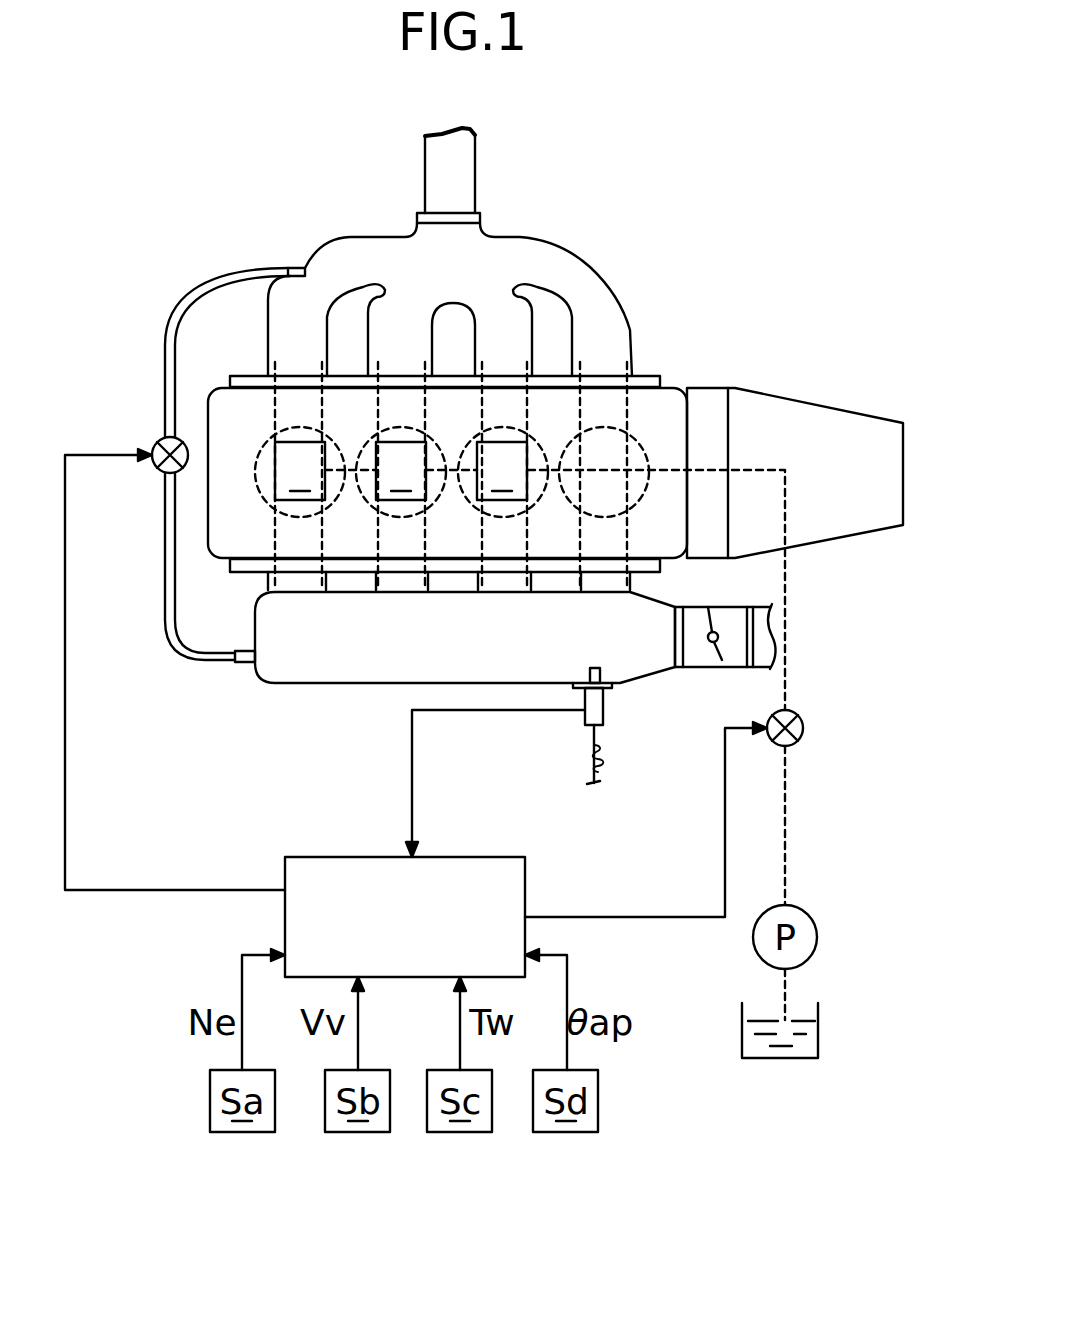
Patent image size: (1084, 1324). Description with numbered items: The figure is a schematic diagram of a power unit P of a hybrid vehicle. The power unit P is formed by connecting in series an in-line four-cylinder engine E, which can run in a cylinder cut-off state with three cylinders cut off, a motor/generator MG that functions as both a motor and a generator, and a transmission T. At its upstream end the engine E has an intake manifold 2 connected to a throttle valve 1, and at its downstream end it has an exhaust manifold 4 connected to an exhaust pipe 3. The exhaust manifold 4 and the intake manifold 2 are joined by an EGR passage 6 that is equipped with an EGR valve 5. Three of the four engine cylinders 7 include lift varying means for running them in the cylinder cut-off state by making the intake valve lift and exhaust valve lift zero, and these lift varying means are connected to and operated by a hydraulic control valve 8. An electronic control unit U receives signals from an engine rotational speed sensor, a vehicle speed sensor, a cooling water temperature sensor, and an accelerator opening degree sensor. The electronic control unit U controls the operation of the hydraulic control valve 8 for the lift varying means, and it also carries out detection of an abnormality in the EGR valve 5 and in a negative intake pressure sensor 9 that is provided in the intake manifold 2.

The throttle valve 1 is at (708, 610).
The intake manifold 2 is at (421, 701).
The exhaust pipe 3 is at (460, 182).
The exhaust manifold 4 is at (590, 267).
The EGR valve 5 is at (165, 442).
The EGR passage 6 is at (165, 367).
The engine cylinders 7 is at (238, 532).
The hydraulic control valve 8 is at (803, 728).
The negative intake pressure sensor 9 is at (597, 700).
The engine E is at (647, 355).
The motor/generator MG is at (702, 407).
The transmission T is at (887, 455).
The power unit P is at (268, 694).
The electronic control unit U is at (396, 934).